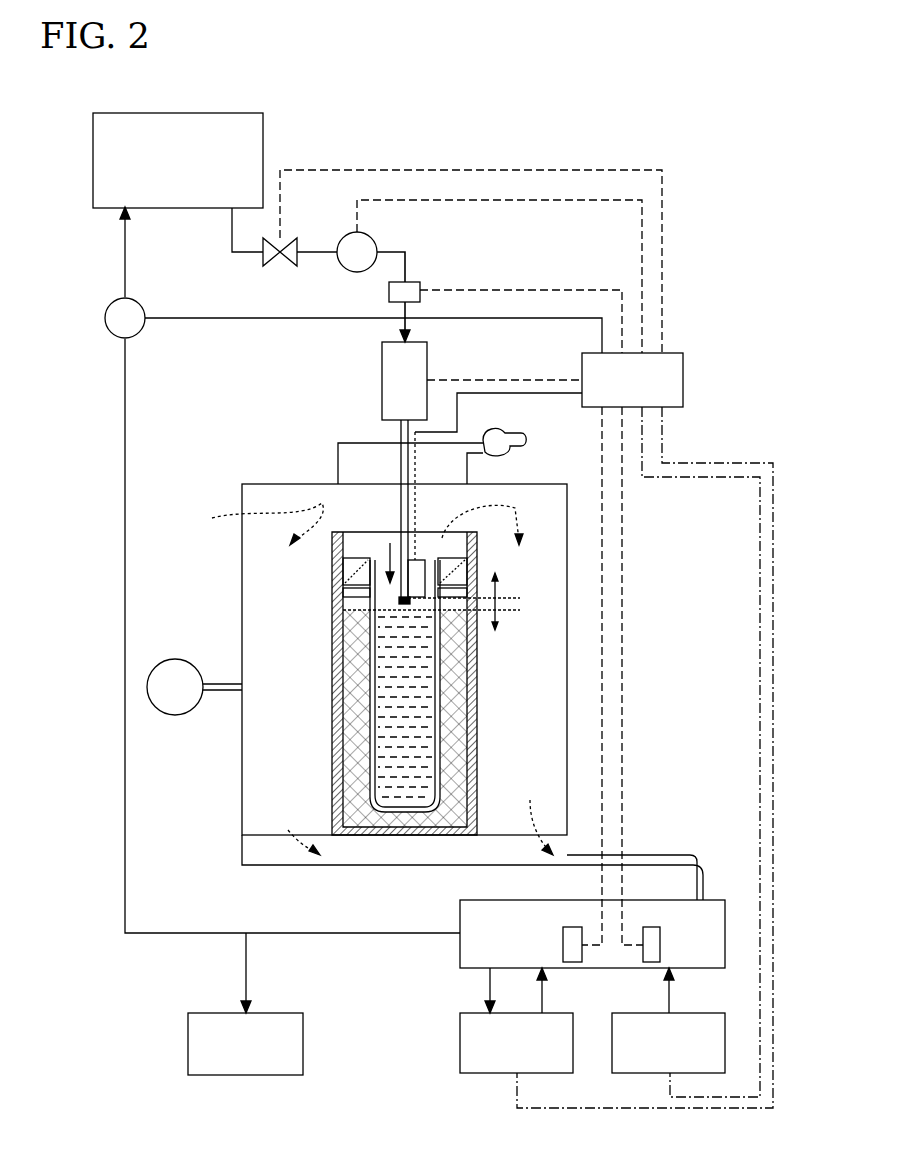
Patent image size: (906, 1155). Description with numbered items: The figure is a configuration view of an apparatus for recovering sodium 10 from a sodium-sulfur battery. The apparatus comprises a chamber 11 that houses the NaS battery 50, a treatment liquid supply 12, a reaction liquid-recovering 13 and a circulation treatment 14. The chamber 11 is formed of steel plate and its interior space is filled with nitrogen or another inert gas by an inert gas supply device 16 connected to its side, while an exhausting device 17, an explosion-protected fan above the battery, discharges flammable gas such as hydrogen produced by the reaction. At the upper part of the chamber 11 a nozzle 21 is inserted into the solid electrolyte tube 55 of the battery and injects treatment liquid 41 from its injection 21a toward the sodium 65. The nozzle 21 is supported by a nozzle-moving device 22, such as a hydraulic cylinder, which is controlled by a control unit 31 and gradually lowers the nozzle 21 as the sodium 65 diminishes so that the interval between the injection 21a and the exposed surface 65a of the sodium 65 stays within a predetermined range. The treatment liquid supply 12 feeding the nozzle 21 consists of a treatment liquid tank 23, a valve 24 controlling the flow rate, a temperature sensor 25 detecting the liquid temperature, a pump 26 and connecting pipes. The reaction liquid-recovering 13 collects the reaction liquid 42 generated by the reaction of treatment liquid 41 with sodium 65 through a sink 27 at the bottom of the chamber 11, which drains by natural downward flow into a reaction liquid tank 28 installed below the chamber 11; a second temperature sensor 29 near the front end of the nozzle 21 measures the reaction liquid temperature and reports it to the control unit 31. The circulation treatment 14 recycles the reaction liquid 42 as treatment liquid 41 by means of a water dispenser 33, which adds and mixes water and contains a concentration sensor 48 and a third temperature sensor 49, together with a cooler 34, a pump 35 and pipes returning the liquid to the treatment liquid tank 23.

The apparatus for recovering sodium 10 is at (708, 112).
The chamber 11 is at (258, 567).
The treatment liquid supply 12 is at (340, 149).
The reaction liquid-recovering 13 is at (711, 844).
The circulation treatment 14 is at (364, 966).
The inert gas supply device 16 is at (175, 659).
The exhausting device 17 is at (503, 425).
The nozzle 21 is at (467, 462).
The injection 21a is at (425, 598).
The nozzle-moving device 22 is at (382, 380).
The treatment liquid tank 23 is at (225, 113).
The valve 24 is at (283, 235).
The temperature sensor (first temperature detector) 25 is at (418, 282).
The pump 26 is at (374, 239).
The sink 27 is at (242, 848).
The reaction liquid tank 28 is at (500, 900).
The temperature sensor (second temperature detector) 29 is at (420, 558).
The control unit 31 is at (683, 378).
The water dispenser 33 is at (690, 1013).
The cooler 34 is at (555, 1013).
The pump 35 is at (143, 301).
The treatment liquid 41 is at (412, 323).
The reaction liquid 42 is at (643, 520).
The concentration sensor 48 is at (651, 925).
The temperature sensor (third temperature detector) 49 is at (563, 940).
The NaS battery 50 is at (313, 694).
The solid electrolyte tube 55 is at (450, 738).
The sodium 65 is at (436, 693).
The exposed surface 65a is at (392, 615).